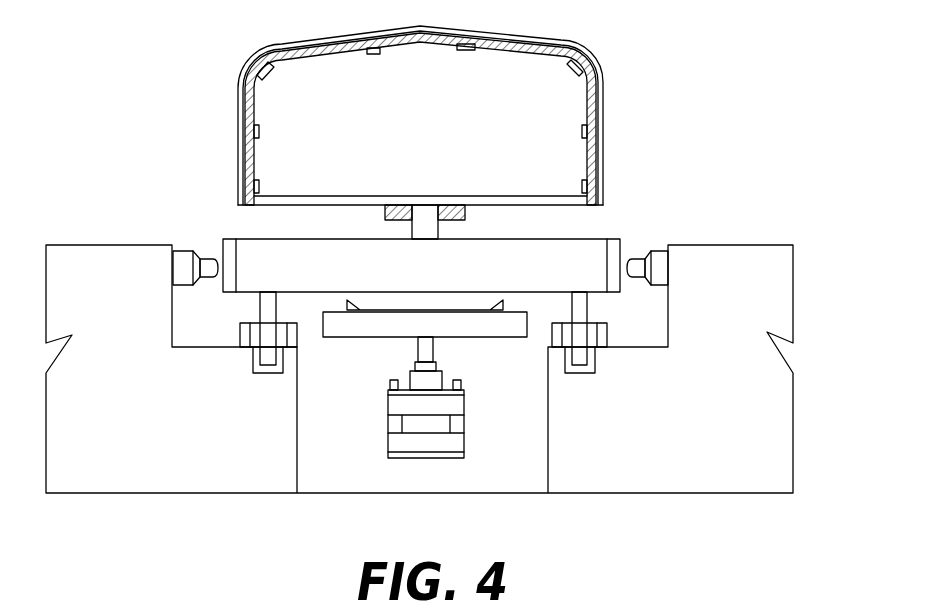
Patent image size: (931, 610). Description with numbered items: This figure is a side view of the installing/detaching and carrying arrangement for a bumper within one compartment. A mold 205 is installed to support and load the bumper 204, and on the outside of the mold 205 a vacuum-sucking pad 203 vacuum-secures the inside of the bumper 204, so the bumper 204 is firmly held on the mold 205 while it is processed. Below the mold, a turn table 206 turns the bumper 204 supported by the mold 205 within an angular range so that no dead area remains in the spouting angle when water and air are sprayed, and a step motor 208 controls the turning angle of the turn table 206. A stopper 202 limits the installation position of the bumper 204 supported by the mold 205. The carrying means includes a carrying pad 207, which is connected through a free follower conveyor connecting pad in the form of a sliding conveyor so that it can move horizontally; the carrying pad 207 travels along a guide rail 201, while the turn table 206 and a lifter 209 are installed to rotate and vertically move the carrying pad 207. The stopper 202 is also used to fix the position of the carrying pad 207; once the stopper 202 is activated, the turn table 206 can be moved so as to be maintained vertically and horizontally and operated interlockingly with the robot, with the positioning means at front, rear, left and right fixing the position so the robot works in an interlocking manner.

The guide rail 201 is at (597, 350).
The stopper 202 is at (662, 262).
The vacuum-sucking pad 203 is at (584, 58).
The bumper 204 is at (262, 54).
The mold 205 is at (393, 34).
The turn table 206 is at (337, 196).
The carrying pad 207 is at (253, 263).
The step motor 208 is at (409, 447).
The lifter 209 is at (342, 326).